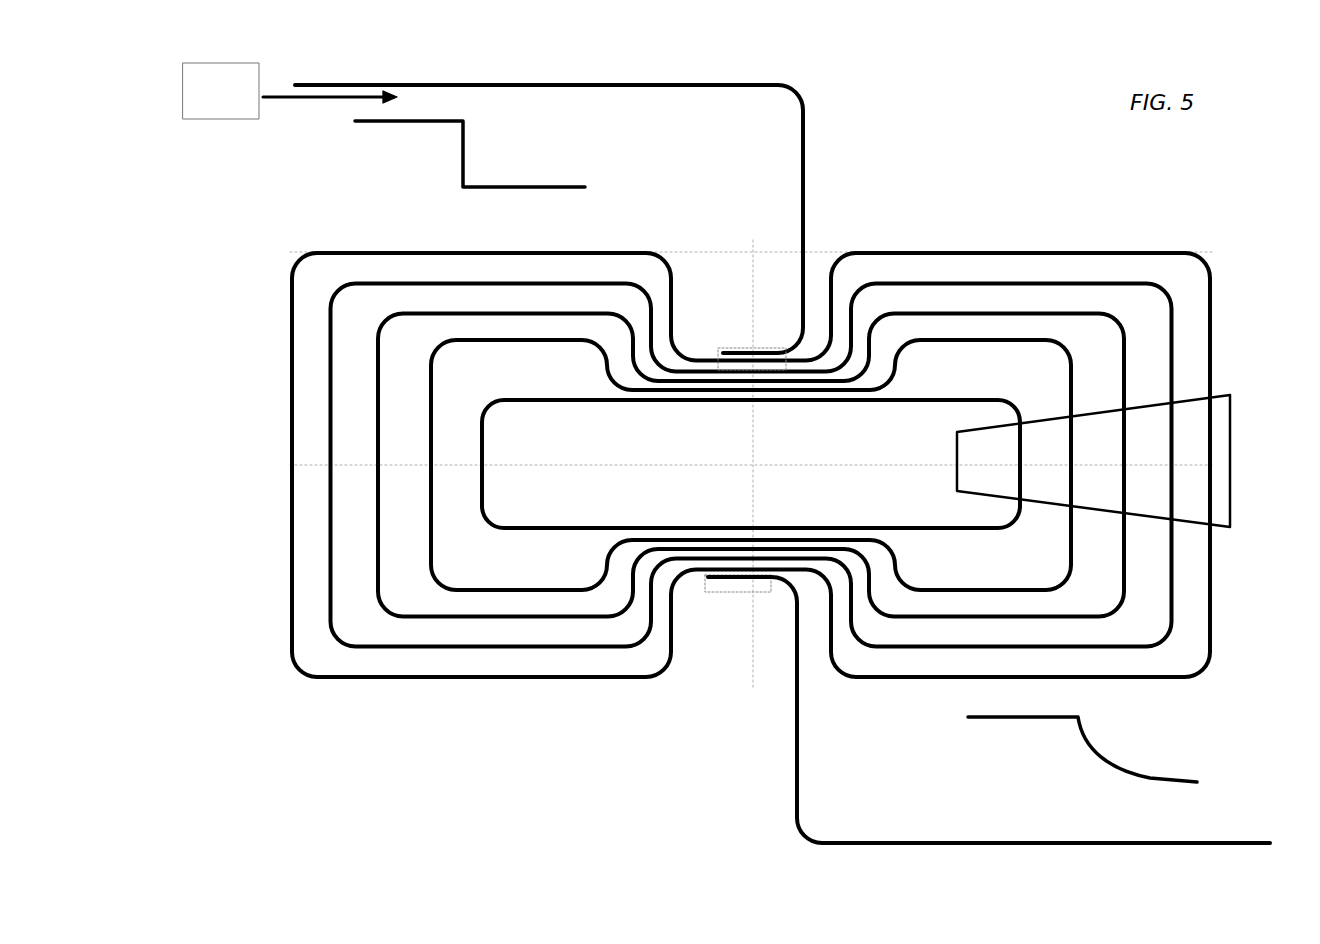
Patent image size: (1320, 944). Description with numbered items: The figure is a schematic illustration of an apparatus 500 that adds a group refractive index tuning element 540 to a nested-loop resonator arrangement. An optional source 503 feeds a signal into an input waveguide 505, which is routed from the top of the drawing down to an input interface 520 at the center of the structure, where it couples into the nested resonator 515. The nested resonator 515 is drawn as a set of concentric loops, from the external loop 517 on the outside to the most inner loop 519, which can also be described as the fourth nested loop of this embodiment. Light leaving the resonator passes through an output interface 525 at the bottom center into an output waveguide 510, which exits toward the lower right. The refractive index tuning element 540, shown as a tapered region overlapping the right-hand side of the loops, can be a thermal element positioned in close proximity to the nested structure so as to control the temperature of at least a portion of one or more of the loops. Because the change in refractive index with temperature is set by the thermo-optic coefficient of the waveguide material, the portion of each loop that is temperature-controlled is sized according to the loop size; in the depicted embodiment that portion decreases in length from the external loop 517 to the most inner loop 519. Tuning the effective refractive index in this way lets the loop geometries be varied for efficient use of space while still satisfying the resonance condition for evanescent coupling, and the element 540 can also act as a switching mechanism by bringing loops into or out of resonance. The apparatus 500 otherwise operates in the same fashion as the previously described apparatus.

The apparatus 500 is at (978, 182).
The optional source 503 is at (290, 91).
The input waveguide 505 is at (805, 180).
The output waveguide 510 is at (802, 810).
The nested resonator 515 is at (278, 215).
The external loop 517 is at (353, 682).
The most inner loop 519 is at (587, 526).
The input interface 520 is at (748, 346).
The output interface 525 is at (728, 592).
The group refractive index tuning element 540 is at (1232, 442).